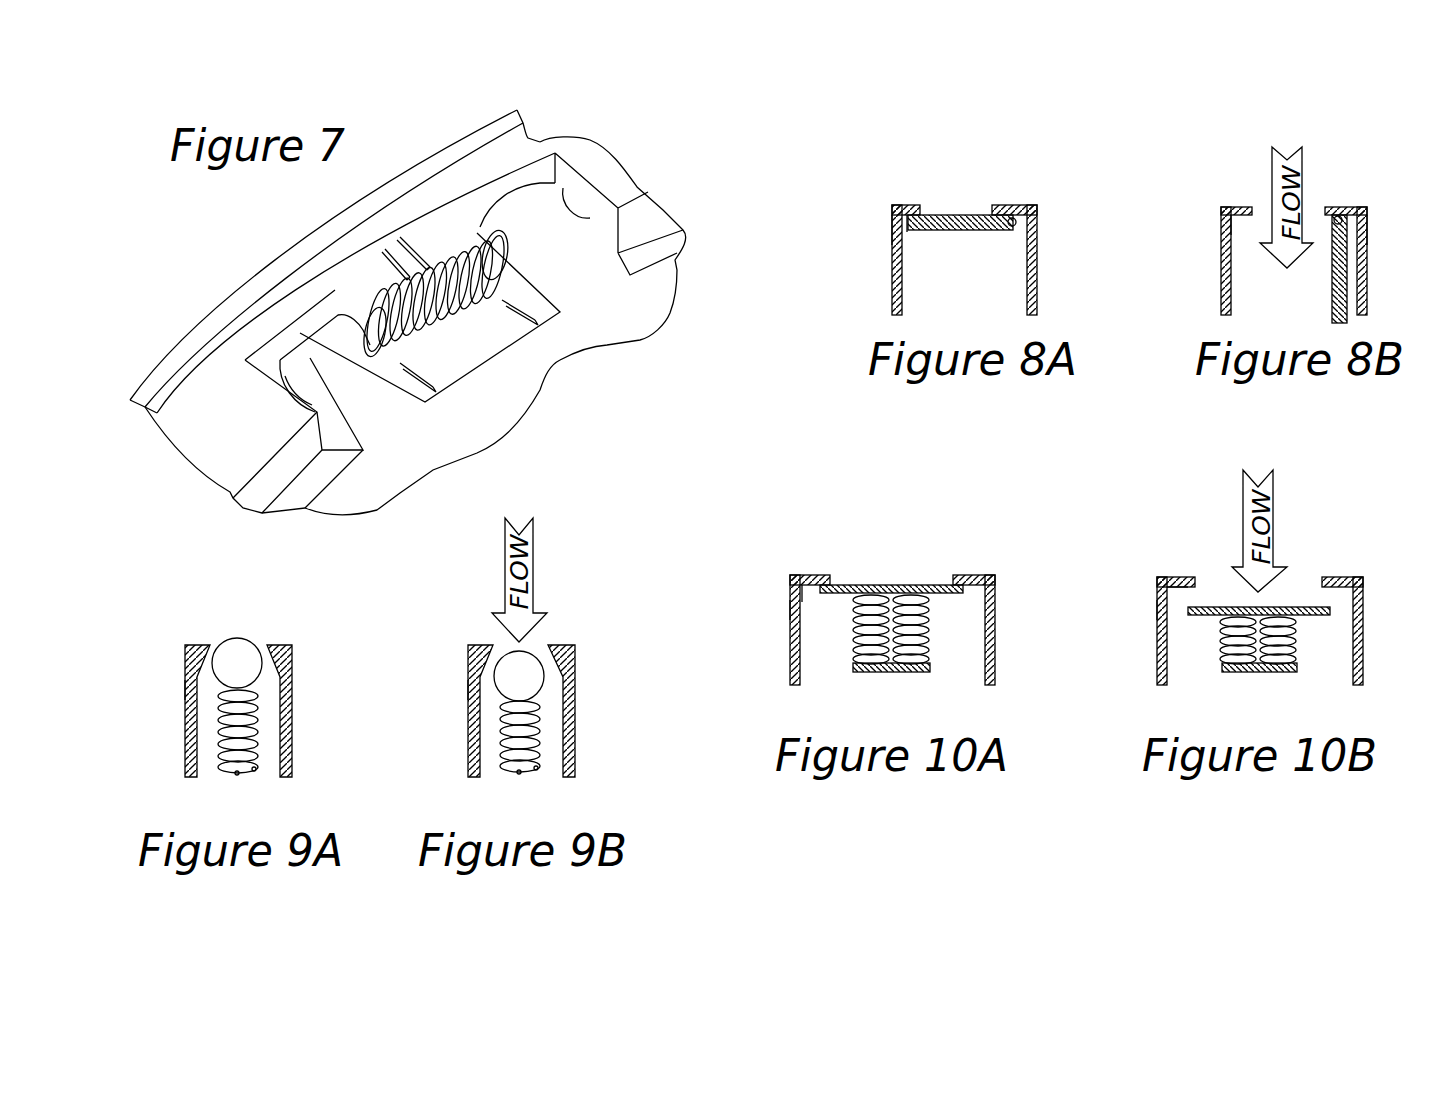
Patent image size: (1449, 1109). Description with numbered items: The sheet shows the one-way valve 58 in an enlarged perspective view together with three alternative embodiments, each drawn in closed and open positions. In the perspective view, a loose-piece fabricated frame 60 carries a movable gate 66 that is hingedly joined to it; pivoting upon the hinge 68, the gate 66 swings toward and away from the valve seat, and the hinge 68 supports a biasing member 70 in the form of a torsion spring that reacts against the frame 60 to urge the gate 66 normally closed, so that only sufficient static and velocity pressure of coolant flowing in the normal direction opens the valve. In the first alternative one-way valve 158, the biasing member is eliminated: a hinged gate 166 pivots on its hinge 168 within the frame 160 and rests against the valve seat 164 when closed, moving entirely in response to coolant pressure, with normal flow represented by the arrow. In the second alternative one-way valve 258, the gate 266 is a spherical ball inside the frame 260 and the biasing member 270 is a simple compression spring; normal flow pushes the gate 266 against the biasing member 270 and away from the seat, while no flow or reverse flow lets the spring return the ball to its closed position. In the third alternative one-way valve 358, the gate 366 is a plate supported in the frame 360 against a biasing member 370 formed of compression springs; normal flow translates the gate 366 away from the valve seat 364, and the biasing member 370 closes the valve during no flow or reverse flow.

In FIG. 7, the one-way valve 58 is at (186, 339).
In FIG. 7, the frame 60 is at (482, 137).
In FIG. 7, the gate 66 is at (660, 310).
In FIG. 7, the hinge 68 is at (517, 255).
In FIG. 7, the biasing member 70 is at (537, 325).
In FIG. 8A, the one-way valve 158 is at (890, 285).
In FIG. 8B, the one-way valve 158 is at (1367, 290).
In FIG. 8A, the frame 160 is at (890, 240).
In FIG. 8B, the frame 160 is at (1367, 230).
In FIG. 8A, the valve seat 164 is at (907, 232).
In FIG. 8B, the valve seat 164 is at (1233, 217).
In FIG. 8A, the hinged gate 166 is at (952, 213).
In FIG. 8B, the hinged gate 166 is at (1332, 312).
In FIG. 8A, the hinge 168 is at (1013, 227).
In FIG. 8B, the hinge 168 is at (1333, 222).
In FIG. 9A, the one-way valve 258 is at (184, 735).
In FIG. 9B, the one-way valve 258 is at (467, 735).
In FIG. 9A, the frame 260 is at (183, 687).
In FIG. 9B, the frame 260 is at (468, 683).
In FIG. 9A, the gate 266 is at (257, 638).
In FIG. 9B, the gate 266 is at (533, 652).
In FIG. 9A, the biasing member 270 is at (258, 757).
In FIG. 9B, the biasing member 270 is at (538, 755).
In FIG. 10A, the one-way valve 358 is at (790, 653).
In FIG. 10B, the one-way valve 358 is at (1157, 657).
In FIG. 10A, the frame 360 is at (790, 608).
In FIG. 10B, the frame 360 is at (1157, 605).
In FIG. 10A, the valve seat 364 is at (803, 592).
In FIG. 10B, the valve seat 364 is at (1175, 597).
In FIG. 10A, the gate 366 is at (887, 587).
In FIG. 10B, the gate 366 is at (1298, 605).
In FIG. 10A, the biasing member 370 is at (928, 640).
In FIG. 10B, the biasing member 370 is at (1297, 642).